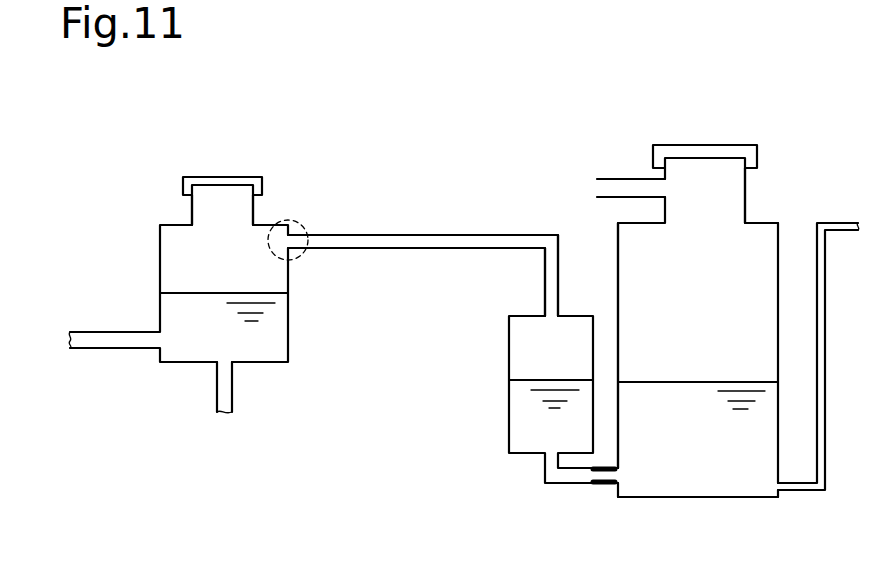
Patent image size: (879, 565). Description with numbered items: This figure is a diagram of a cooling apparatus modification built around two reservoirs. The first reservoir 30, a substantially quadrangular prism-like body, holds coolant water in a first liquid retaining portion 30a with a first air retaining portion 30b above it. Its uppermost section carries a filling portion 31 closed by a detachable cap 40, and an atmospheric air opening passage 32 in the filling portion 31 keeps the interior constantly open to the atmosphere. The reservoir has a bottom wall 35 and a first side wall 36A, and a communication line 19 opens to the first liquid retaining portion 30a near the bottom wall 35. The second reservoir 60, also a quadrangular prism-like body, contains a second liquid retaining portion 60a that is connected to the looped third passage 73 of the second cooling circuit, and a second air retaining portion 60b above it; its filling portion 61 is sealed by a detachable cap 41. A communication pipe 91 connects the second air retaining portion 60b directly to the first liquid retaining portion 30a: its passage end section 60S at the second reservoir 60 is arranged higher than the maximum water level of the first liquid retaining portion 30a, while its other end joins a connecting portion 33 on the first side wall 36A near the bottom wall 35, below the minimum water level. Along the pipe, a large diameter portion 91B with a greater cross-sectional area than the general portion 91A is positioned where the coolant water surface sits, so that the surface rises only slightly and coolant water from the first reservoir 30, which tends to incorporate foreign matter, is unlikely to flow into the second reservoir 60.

The communication line 19 is at (800, 492).
The first reservoir 30 is at (697, 497).
The first liquid retaining portion 30a is at (738, 467).
The first air retaining portion 30b is at (665, 287).
The filling portion 31 is at (745, 190).
The atmospheric air opening passage 32 is at (618, 179).
The connecting portion 33 is at (600, 487).
The bottom wall 35 is at (643, 497).
The first side wall 36A is at (618, 262).
The cap 40 is at (705, 145).
The cap 41 is at (221, 177).
The second reservoir 60 is at (160, 272).
The second liquid retaining portion 60a is at (273, 333).
The second air retaining portion 60b is at (273, 271).
The passage end section 60S is at (292, 224).
The filling portion 61 is at (192, 212).
The third passage 73 is at (217, 388).
The communication pipe 91 is at (422, 235).
The general portion 91A is at (506, 235).
The large diameter portion 91B is at (509, 352).